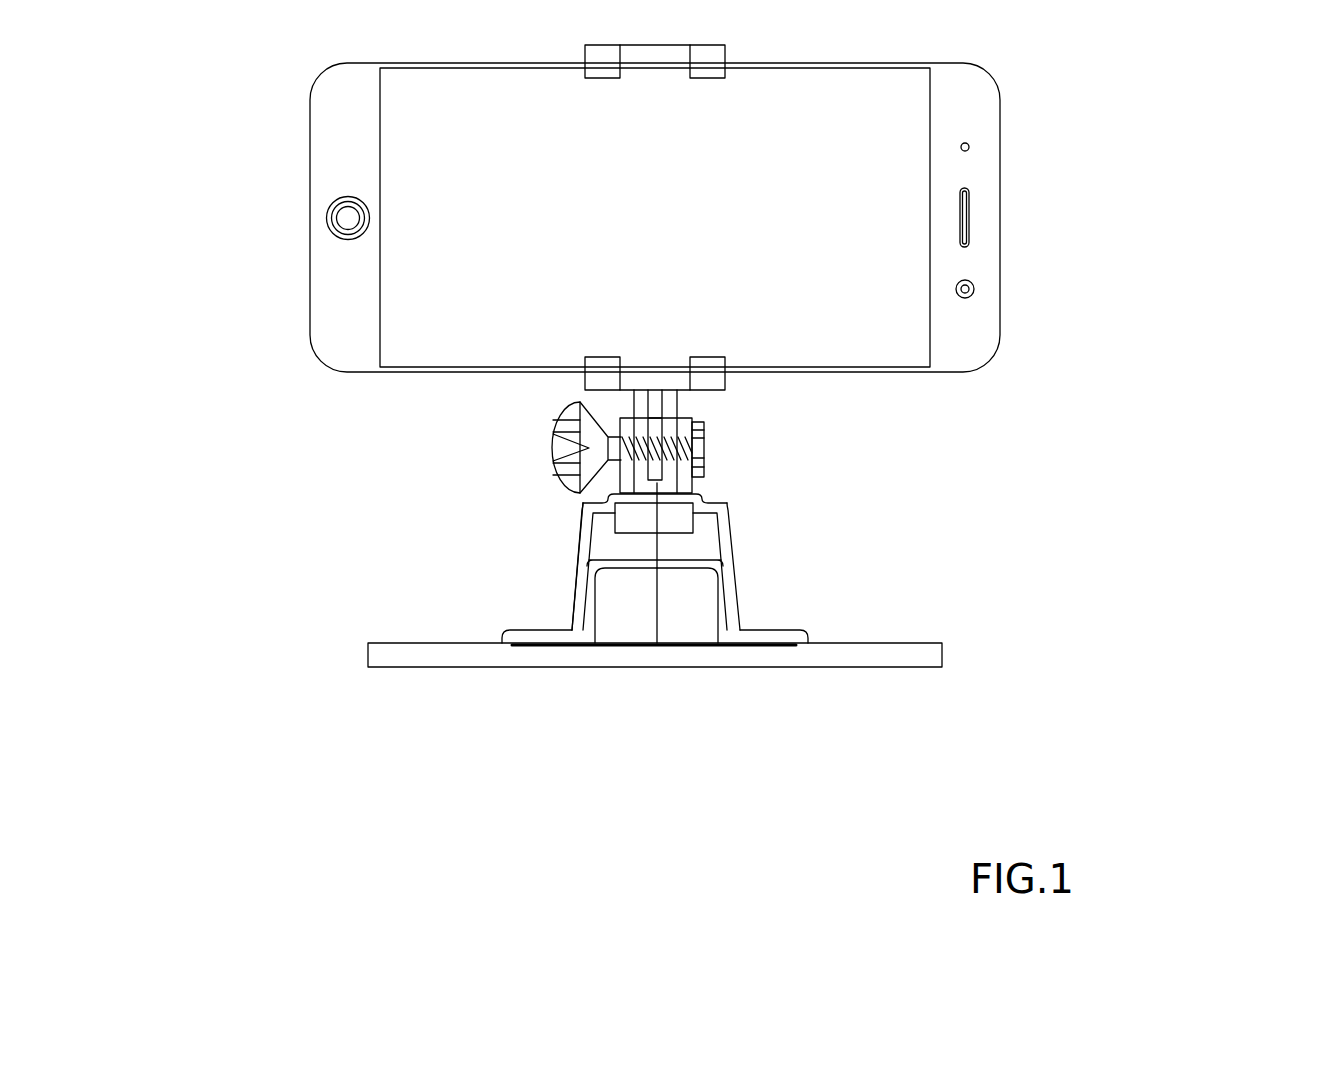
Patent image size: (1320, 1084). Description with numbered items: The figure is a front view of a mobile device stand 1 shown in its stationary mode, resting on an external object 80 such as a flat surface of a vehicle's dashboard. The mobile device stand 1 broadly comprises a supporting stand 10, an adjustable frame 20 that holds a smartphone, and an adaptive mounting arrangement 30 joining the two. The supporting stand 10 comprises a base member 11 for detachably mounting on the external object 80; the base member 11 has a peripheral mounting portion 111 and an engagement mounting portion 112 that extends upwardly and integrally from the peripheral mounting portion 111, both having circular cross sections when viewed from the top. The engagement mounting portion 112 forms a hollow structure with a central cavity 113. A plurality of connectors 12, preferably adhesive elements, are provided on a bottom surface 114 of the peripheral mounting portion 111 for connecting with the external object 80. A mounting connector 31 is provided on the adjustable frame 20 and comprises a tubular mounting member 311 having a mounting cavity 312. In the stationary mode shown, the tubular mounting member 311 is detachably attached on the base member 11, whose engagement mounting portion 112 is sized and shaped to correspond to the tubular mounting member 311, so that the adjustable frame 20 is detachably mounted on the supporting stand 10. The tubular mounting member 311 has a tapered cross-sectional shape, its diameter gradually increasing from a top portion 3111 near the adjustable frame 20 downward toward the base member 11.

The mobile device stand 1 is at (1185, 463).
The supporting stand 10 is at (768, 595).
The base member 11 is at (758, 637).
The peripheral mounting portion 111 is at (805, 630).
The engagement mounting portion 112 is at (705, 572).
The central cavity 113 is at (627, 617).
The bottom surface 114 is at (513, 643).
The connectors 12 is at (567, 647).
The adjustable frame 20 is at (498, 424).
The adaptive mounting arrangement 30 is at (533, 533).
The mounting connector 31 is at (530, 596).
The tubular mounting member 311 is at (722, 540).
The top portion 3111 is at (698, 522).
The mounting cavity 312 is at (605, 523).
The external object 80 is at (927, 640).